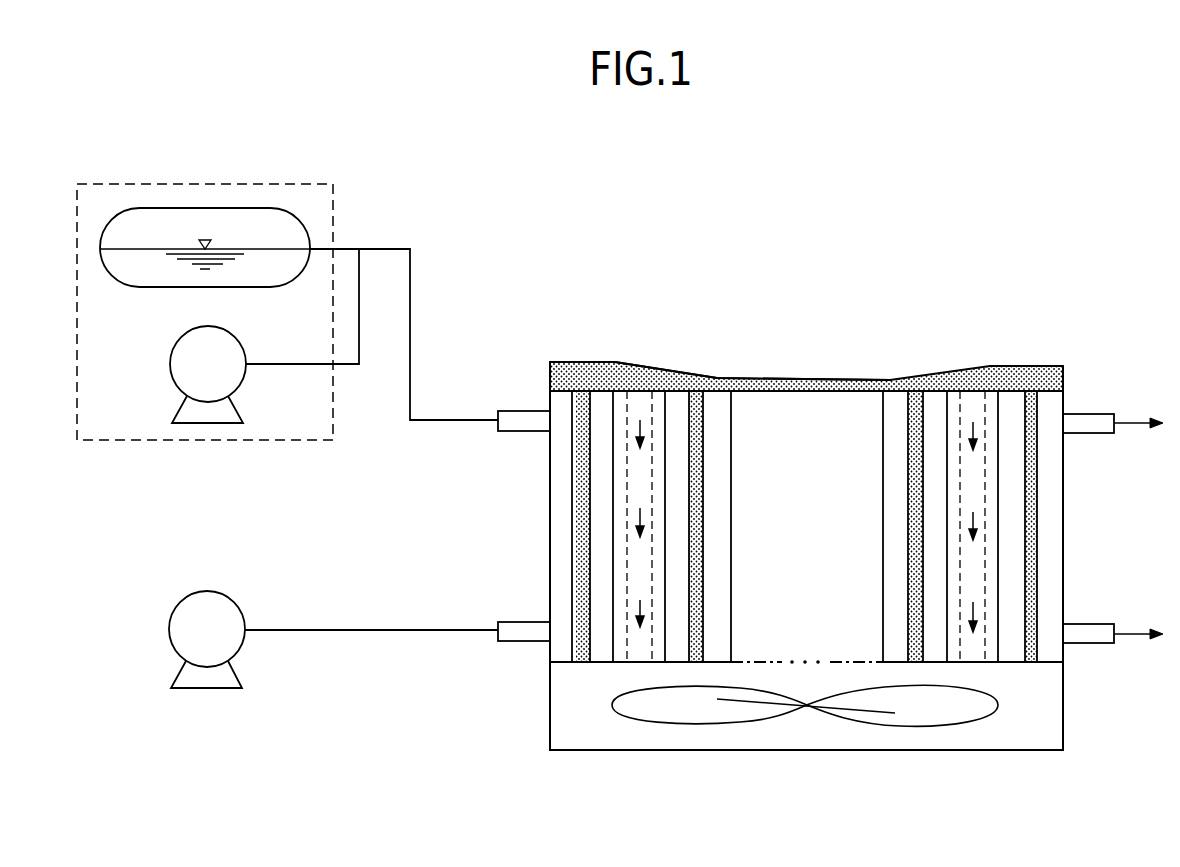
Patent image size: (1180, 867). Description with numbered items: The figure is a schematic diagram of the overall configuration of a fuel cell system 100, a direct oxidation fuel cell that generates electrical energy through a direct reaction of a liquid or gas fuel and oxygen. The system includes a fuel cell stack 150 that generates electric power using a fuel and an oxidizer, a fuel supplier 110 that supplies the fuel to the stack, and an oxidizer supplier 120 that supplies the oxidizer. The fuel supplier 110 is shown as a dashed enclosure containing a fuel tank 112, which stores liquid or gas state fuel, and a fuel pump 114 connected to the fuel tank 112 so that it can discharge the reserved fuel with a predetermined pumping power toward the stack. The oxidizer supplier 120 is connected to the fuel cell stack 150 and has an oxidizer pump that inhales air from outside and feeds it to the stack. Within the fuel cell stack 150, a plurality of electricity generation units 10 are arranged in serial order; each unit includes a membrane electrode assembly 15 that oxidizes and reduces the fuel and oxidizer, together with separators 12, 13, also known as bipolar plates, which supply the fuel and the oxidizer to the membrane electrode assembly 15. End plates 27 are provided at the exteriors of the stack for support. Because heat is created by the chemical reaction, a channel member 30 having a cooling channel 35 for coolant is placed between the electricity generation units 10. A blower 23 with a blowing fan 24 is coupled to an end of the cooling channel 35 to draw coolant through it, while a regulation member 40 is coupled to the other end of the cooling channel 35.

The fuel cell system 100 is at (689, 223).
The electricity generation unit 10 is at (915, 619).
The separator 12 is at (933, 653).
The separator 13 is at (897, 653).
The membrane electrode assembly 15 is at (913, 653).
The blower 23 is at (587, 750).
The blowing fan 24 is at (658, 722).
The end plate 27 is at (550, 570).
The channel member 30 is at (1006, 507).
The cooling channel 35 is at (985, 470).
The regulation member 40 is at (1040, 352).
The fuel supplier 110 is at (205, 271).
The fuel tank 112 is at (261, 208).
The fuel pump 114 is at (172, 343).
The oxidizer supplier 120 is at (172, 610).
The fuel cell stack 150 is at (903, 336).